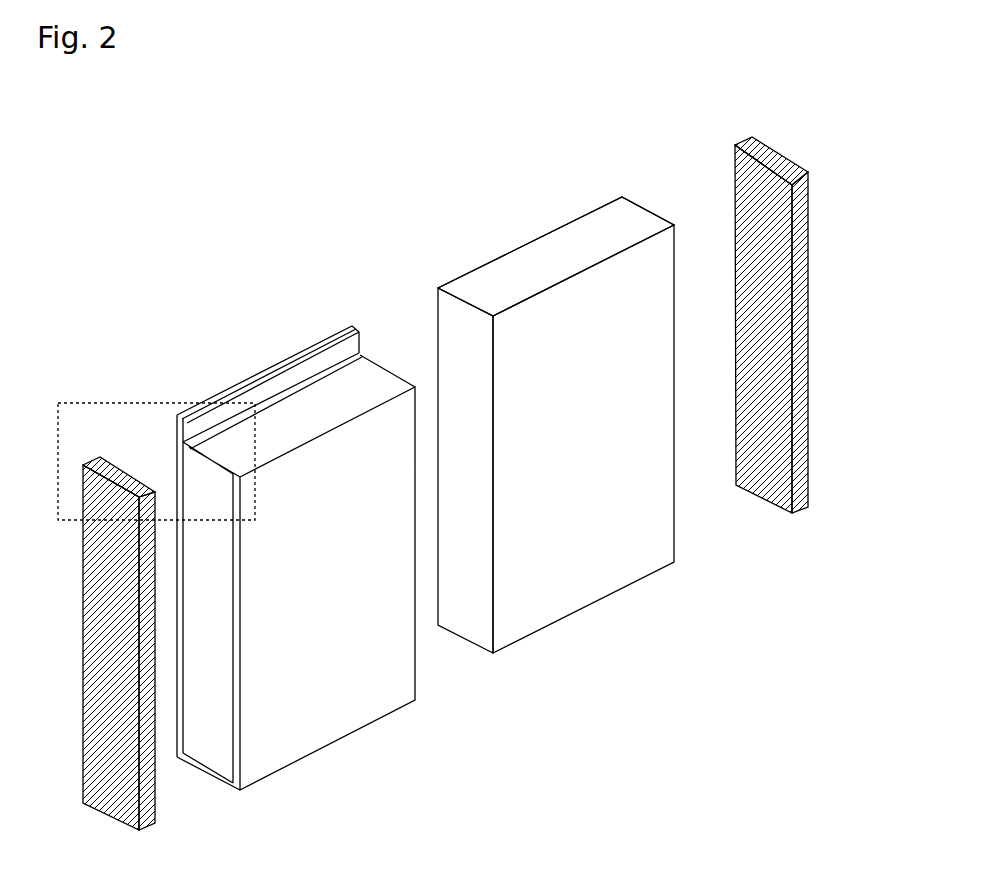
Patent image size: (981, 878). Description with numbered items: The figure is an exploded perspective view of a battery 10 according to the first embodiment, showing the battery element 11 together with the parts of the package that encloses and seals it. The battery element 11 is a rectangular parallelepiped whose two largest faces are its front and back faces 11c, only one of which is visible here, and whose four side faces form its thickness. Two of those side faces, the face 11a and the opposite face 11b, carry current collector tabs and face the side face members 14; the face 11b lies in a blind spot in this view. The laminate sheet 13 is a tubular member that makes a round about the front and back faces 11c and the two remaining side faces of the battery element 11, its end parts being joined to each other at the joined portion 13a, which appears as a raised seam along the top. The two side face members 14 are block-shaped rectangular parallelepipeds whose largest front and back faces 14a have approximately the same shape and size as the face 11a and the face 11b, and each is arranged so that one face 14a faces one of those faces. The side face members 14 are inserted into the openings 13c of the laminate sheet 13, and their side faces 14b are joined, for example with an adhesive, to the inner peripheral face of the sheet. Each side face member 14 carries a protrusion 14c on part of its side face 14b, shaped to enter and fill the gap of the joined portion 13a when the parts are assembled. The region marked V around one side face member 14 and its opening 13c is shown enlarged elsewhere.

The battery 10 is at (272, 168).
The battery element 11 is at (530, 228).
The face 11a is at (465, 330).
The face 11b is at (664, 206).
The front and back faces 11c is at (593, 577).
The laminate sheet 13 is at (246, 336).
The joined portion 13a is at (220, 397).
The openings 13c is at (188, 488).
The side face members 14 is at (72, 445).
The front and back faces 14a is at (112, 800).
The side faces 14b is at (155, 800).
The protrusion 14c is at (97, 458).
The portion surrounded as indicated by V is at (128, 403).